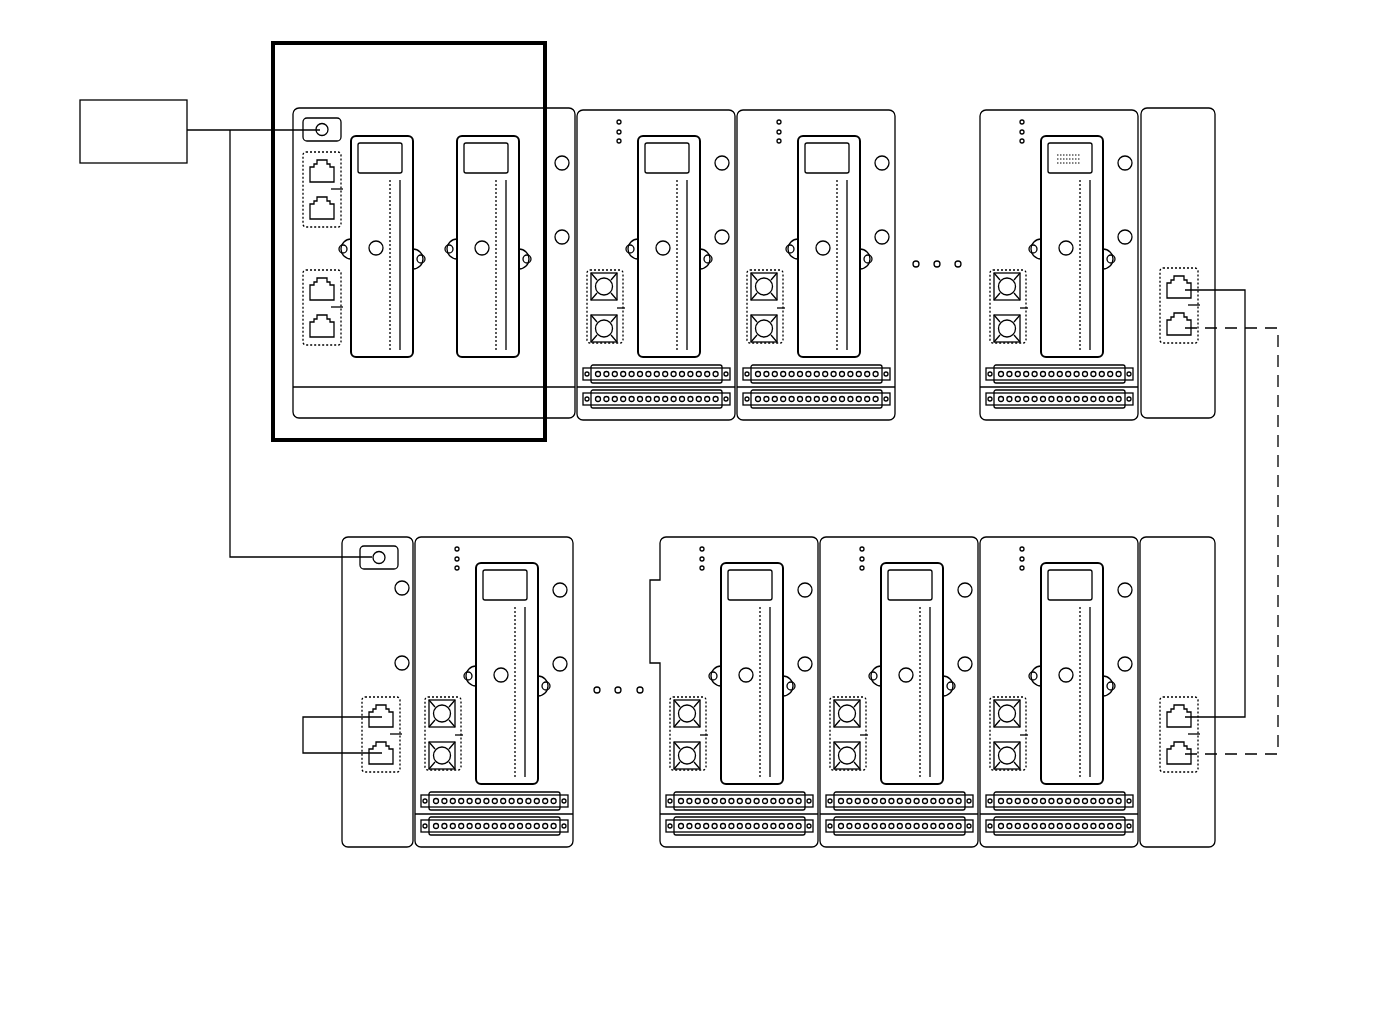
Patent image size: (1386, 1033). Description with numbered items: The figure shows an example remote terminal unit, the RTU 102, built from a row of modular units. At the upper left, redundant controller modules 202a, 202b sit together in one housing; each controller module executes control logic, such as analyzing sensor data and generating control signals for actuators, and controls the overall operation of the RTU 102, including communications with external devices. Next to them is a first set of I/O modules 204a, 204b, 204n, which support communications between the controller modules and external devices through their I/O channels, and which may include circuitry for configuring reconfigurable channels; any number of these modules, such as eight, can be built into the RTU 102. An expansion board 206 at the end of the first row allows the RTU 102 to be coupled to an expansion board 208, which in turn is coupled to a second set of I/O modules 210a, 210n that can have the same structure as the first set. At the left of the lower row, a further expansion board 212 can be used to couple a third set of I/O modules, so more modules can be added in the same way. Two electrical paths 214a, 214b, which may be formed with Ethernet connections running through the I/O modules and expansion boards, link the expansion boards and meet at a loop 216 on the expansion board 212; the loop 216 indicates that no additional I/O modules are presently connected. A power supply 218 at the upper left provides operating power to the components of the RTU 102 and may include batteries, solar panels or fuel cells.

The RTU 102 is at (1297, 191).
The controller module 202a is at (381, 150).
The controller module 202b is at (486, 150).
The I/O module 204a is at (662, 150).
The I/O module 204b is at (822, 150).
The I/O module 204n is at (1068, 150).
The expansion board 206 is at (1160, 90).
The expansion board 208 is at (1210, 803).
The I/O module 210a is at (1075, 514).
The I/O module 210n is at (482, 518).
The expansion board 212 is at (348, 803).
The electrical path 214a is at (1243, 474).
The electrical path 214b is at (1282, 416).
The loop 216 is at (303, 735).
The power supply 218 is at (133, 100).